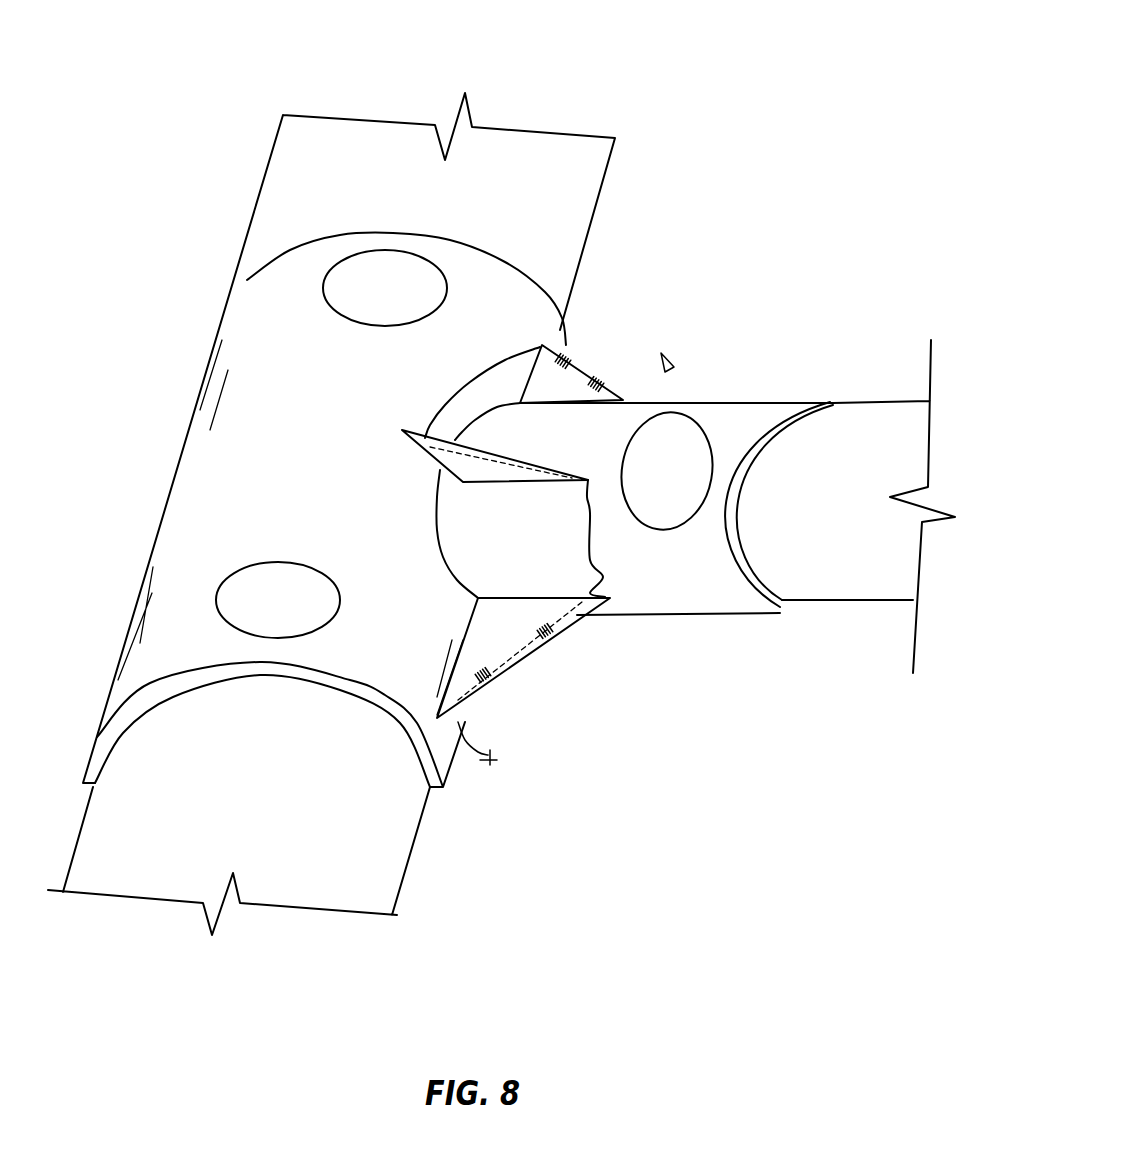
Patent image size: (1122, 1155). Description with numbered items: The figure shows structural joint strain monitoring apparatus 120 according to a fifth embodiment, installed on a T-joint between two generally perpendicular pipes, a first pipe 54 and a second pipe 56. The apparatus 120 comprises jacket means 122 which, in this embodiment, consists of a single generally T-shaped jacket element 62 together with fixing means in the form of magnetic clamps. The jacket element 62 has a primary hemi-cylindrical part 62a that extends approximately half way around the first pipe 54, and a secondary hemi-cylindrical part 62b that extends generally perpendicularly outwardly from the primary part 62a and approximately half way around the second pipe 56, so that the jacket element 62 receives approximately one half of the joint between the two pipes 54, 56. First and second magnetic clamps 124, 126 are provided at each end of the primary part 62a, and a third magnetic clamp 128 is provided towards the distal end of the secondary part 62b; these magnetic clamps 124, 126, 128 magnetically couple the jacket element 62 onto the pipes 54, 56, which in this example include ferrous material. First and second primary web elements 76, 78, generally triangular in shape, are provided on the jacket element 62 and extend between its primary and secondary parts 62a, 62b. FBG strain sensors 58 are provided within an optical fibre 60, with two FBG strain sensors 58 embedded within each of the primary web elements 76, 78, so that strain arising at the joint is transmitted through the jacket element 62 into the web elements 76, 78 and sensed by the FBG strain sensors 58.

The structural joint strain monitoring apparatus 120 is at (700, 58).
The jacket means 122 is at (215, 172).
The first magnetic clamp 124 is at (380, 280).
The second magnetic clamp 126 is at (253, 583).
The third magnetic clamp 128 is at (650, 515).
The first pipe 54 is at (373, 878).
The second pipe 56 is at (793, 580).
The FBG strain sensor 58 is at (560, 356).
The optical fibre 60 is at (640, 397).
The jacket element 62 is at (208, 487).
The primary hemi-cylindrical part 62a is at (253, 355).
The secondary hemi-cylindrical part 62b is at (737, 413).
The first primary web element 76 is at (570, 395).
The second primary web element 78 is at (575, 617).